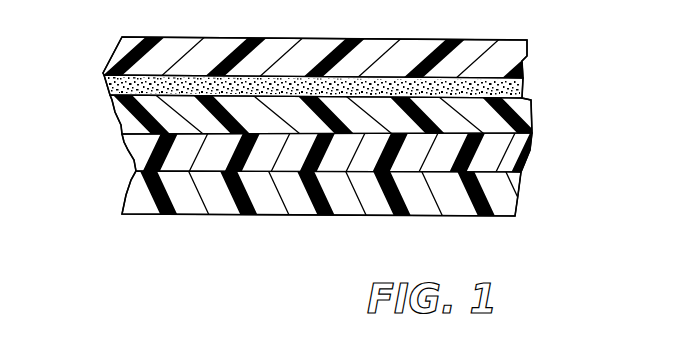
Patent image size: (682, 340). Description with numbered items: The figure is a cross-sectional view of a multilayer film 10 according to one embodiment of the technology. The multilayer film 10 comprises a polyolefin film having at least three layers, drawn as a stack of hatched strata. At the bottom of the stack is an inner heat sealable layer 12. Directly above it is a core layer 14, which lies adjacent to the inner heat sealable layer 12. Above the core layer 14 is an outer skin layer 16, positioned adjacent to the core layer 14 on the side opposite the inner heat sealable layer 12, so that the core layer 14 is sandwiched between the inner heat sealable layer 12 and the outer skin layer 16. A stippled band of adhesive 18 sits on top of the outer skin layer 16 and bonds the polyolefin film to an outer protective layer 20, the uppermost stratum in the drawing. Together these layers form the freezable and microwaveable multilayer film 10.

The multilayer film 10 is at (103, 120).
The inner heat sealable layer 12 is at (528, 205).
The core layer 14 is at (539, 162).
The outer skin layer 16 is at (540, 117).
The adhesive 18 is at (531, 83).
The outer protective layer 20 is at (530, 64).